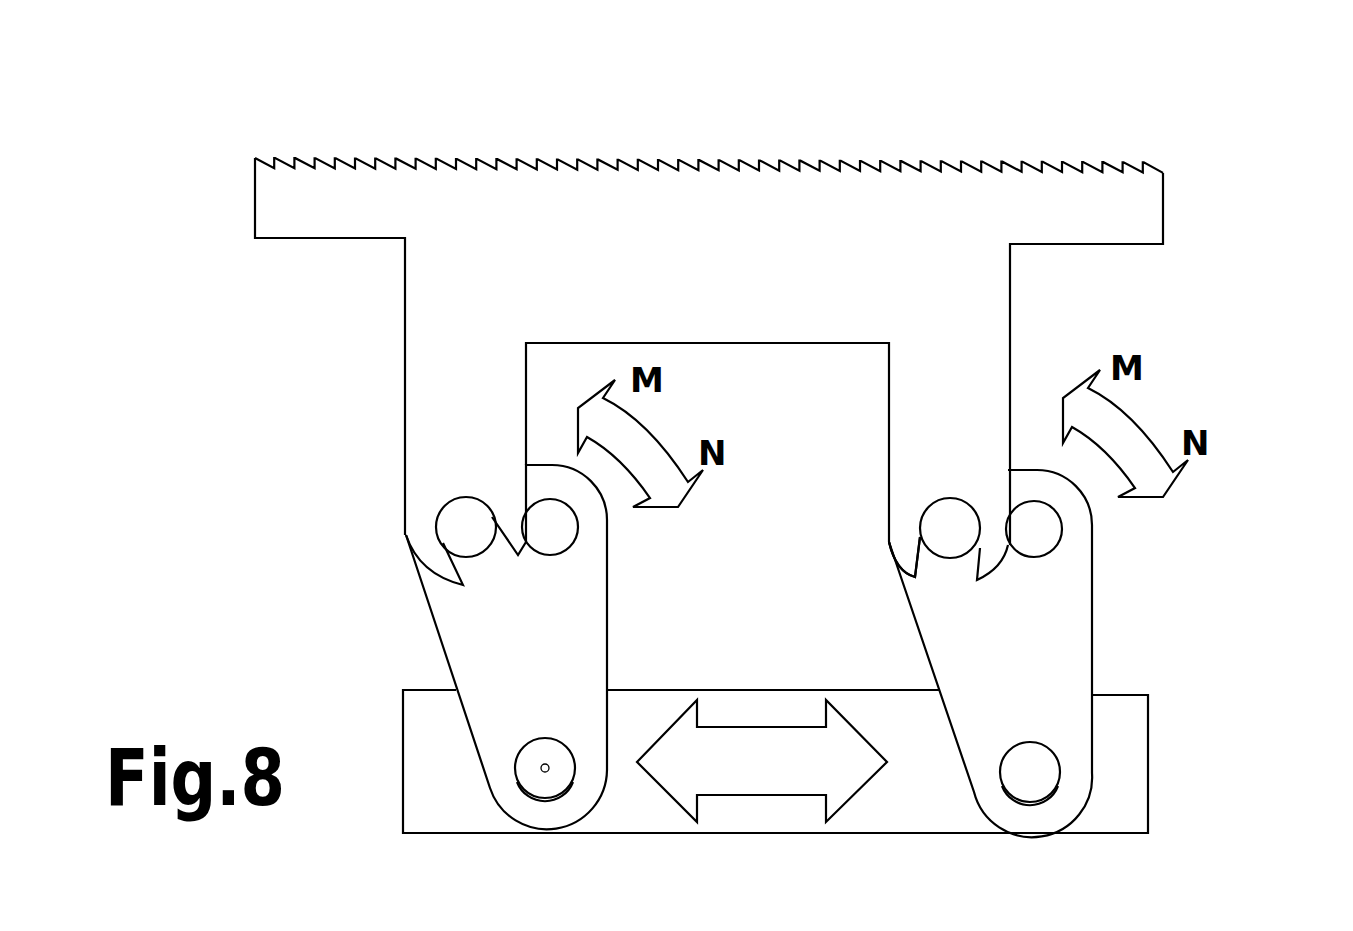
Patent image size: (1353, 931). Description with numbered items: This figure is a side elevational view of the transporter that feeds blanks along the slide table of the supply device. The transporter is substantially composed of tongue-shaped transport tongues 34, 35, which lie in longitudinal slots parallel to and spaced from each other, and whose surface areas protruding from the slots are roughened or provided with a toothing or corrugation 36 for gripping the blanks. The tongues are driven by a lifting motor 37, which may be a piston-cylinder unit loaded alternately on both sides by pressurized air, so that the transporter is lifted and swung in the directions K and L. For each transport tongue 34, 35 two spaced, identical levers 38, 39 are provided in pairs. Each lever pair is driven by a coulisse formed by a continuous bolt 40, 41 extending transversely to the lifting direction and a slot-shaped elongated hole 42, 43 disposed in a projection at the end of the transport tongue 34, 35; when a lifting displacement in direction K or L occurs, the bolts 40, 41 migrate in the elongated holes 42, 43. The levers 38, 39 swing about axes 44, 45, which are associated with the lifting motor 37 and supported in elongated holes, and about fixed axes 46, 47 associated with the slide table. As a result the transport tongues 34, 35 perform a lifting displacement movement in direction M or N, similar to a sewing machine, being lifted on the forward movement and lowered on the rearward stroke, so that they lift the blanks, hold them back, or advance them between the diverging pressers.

The transport tongue 34 is at (653, 309).
The transport tongue 35 is at (477, 230).
The toothing or corrugation 36 is at (295, 155).
The lifting motor 37 is at (1113, 772).
The lever 38 is at (1027, 643).
The lever 39 is at (523, 652).
The bolt 40 is at (466, 527).
The bolt 41 is at (950, 528).
The slot-shaped elongated hole 42 is at (510, 547).
The slot-shaped elongated hole 43 is at (977, 565).
The axis 44 is at (545, 768).
The axis 45 is at (1030, 772).
The fixed axis 46 is at (550, 527).
The fixed axis 47 is at (1034, 529).